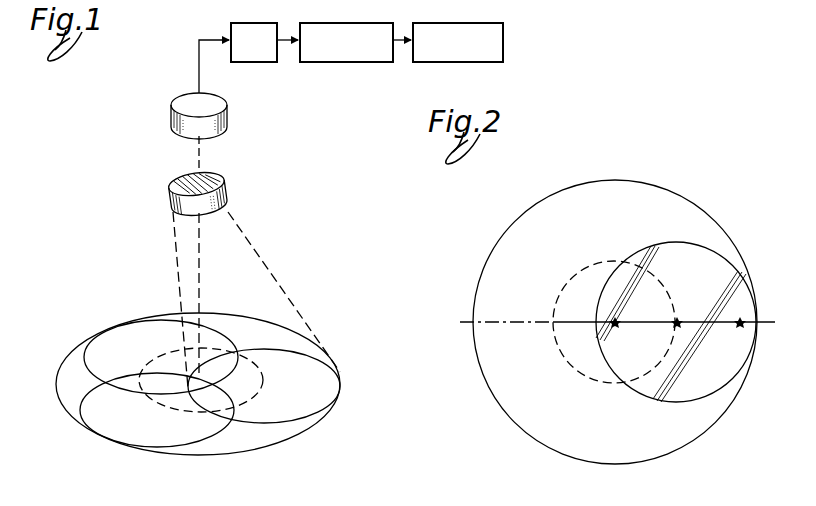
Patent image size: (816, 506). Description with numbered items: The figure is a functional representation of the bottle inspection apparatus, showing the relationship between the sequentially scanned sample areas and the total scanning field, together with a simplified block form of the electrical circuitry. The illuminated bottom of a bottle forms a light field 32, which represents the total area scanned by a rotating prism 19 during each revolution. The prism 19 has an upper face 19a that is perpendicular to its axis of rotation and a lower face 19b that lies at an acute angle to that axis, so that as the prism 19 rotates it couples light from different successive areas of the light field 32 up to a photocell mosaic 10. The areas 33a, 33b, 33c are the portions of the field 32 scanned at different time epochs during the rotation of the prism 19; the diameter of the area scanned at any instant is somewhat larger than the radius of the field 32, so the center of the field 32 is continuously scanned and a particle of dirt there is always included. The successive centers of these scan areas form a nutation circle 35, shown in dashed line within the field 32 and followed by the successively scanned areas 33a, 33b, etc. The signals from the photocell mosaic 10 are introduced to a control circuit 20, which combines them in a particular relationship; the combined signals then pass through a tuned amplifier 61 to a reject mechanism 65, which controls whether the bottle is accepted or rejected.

In FIG. 1, the photocell mosaic 10 is at (171, 122).
In FIG. 1, the rotating prism 19 is at (209, 211).
In FIG. 1, the upper face 19a is at (188, 178).
In FIG. 1, the lower face 19b is at (186, 205).
In FIG. 1, the control circuit 20 is at (257, 36).
In FIG. 1, the tuned amplifier 61 is at (364, 23).
In FIG. 1, the reject mechanism 65 is at (466, 23).
In FIG. 1, the light field 32 is at (305, 432).
In FIG. 2, the light field 32 is at (685, 196).
In FIG. 1, the scanned area 33a is at (283, 348).
In FIG. 2, the scanned area 33a is at (693, 242).
In FIG. 1, the scanned area 33b is at (83, 400).
In FIG. 1, the scanned area 33c is at (85, 357).
In FIG. 1, the nutation circle 35 is at (168, 407).
In FIG. 2, the nutation circle 35 is at (583, 379).